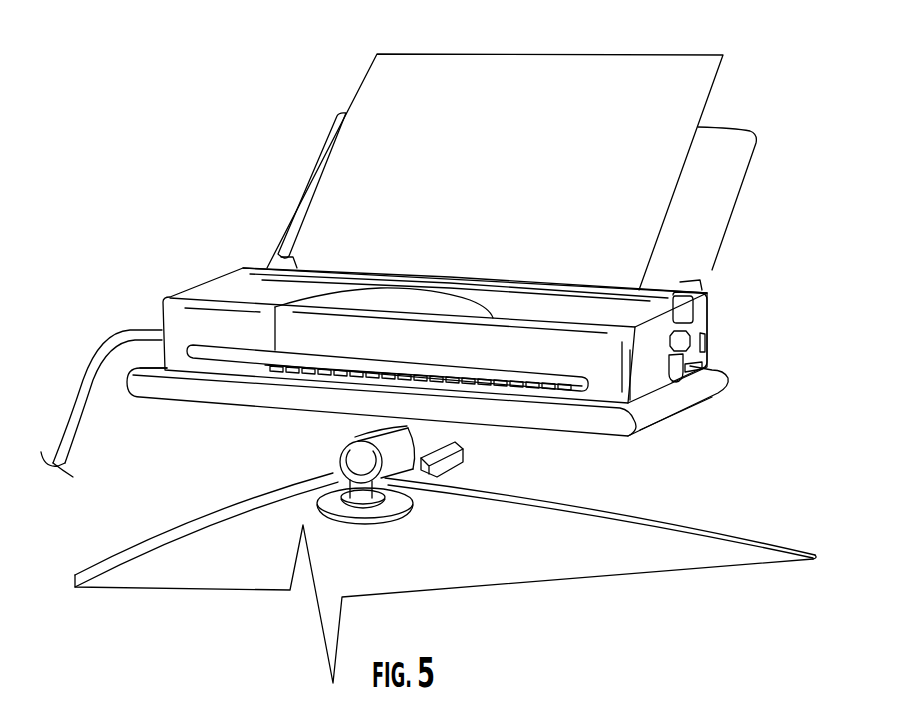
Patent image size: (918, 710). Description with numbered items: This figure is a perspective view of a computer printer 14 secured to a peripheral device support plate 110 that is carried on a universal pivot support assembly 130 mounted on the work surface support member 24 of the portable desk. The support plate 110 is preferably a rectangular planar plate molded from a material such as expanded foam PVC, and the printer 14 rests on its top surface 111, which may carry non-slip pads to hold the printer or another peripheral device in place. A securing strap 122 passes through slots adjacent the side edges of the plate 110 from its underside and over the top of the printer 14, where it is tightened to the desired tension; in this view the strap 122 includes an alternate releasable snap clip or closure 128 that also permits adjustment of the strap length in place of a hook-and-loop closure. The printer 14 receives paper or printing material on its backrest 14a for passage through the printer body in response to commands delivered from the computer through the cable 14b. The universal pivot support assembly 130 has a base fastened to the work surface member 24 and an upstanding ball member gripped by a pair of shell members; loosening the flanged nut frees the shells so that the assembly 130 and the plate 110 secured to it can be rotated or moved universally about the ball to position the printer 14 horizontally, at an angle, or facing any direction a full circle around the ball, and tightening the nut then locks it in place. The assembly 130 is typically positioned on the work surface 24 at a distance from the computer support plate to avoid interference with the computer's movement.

The computer printer 14 is at (201, 280).
The backrest 14a is at (692, 84).
The cable 14b is at (110, 343).
The work surface support member 24 is at (648, 542).
The peripheral device support plate 110 is at (730, 371).
The top surface 111 is at (157, 370).
The securing strap 122 is at (267, 270).
The releasable snap clip 128 is at (697, 323).
The universal pivot support assembly 130 is at (337, 455).